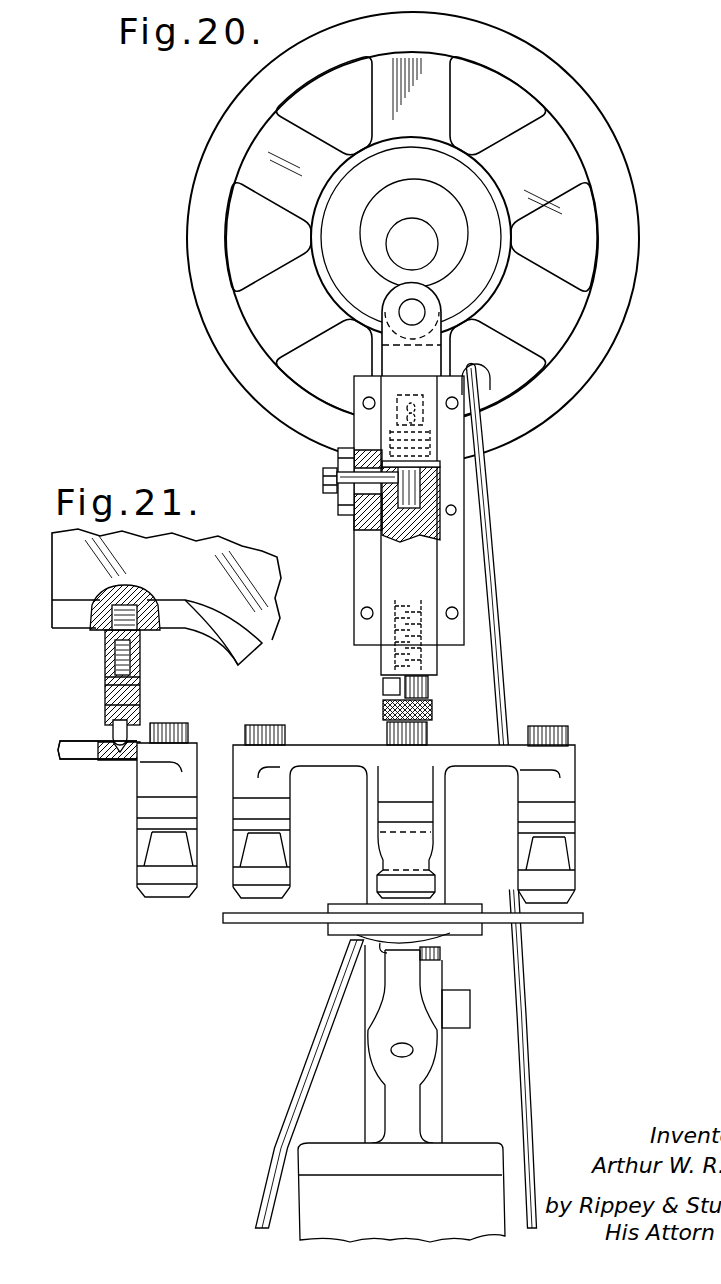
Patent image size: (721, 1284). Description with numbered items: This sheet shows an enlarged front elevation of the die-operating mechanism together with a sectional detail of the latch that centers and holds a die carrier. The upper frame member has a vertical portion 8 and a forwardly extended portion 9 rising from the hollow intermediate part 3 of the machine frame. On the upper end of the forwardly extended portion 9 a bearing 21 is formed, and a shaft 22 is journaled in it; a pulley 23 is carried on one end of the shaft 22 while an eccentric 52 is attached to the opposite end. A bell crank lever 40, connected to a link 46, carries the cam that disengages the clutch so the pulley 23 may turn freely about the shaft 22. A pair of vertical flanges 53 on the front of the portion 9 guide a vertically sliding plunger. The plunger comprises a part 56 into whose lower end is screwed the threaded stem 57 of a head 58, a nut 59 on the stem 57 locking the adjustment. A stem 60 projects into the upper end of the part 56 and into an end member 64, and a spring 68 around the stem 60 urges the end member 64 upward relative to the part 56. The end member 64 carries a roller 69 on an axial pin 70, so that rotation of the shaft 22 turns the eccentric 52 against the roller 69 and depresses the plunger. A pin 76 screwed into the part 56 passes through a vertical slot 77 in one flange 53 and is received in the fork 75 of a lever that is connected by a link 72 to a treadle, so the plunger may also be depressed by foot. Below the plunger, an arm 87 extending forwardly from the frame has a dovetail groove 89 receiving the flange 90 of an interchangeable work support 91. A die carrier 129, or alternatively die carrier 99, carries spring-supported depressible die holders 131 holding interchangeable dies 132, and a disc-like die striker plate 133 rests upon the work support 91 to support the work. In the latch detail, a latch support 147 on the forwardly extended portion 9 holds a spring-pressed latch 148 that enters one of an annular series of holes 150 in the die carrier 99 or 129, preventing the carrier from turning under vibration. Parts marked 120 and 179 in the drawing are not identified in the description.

In FIG. 20, the pulley 23 is at (592, 142).
In FIG. 20, the bearing 21 is at (465, 257).
In FIG. 20, the eccentric 52 is at (435, 200).
In FIG. 20, the shaft 22 is at (423, 237).
In FIG. 20, the vertical portion 8 is at (378, 335).
In FIG. 21, the vertical portion 8 is at (258, 615).
In FIG. 20, the roller 69 is at (435, 285).
In FIG. 20, the axial pin 70 is at (414, 311).
In FIG. 20, the end member 64 is at (422, 361).
In FIG. 20, the vertical flanges 53 is at (362, 607).
In FIG. 20, the plunger part 56 is at (407, 557).
In FIG. 20, the stem 60 is at (388, 537).
In FIG. 20, the spring 68 is at (440, 465).
In FIG. 20, the vertical slot 77 is at (362, 497).
In FIG. 20, the fork 75 is at (345, 500).
In FIG. 20, the pin 76 is at (327, 483).
In FIG. 20, the nut 59 is at (385, 685).
In FIG. 20, the threaded stem 57 is at (428, 693).
In FIG. 20, the head 58 is at (430, 713).
In FIG. 20, the link 46 is at (496, 568).
In FIG. 20, the bell crank lever 40 is at (490, 376).
In FIG. 20, the frame bar 120 is at (320, 755).
In FIG. 20, the die holders 131 is at (410, 737).
In FIG. 21, the die holders 131 is at (192, 730).
In FIG. 20, the dies 132 is at (388, 875).
In FIG. 21, the dies 132 is at (160, 872).
In FIG. 20, the work support 91 is at (370, 932).
In FIG. 20, the die striker plate 133 is at (583, 918).
In FIG. 20, the dovetail groove 89 is at (387, 950).
In FIG. 20, the flange 90 is at (402, 948).
In FIG. 20, the arm 87 is at (407, 968).
In FIG. 20, the intermediate part 3 is at (475, 1197).
In FIG. 20, the link 72 is at (277, 1148).
In FIG. 21, the forwardly extended portion 9 is at (68, 558).
In FIG. 21, the bolt head boss 179 is at (140, 655).
In FIG. 21, the latch support 147 is at (110, 660).
In FIG. 21, the latch 148 is at (118, 733).
In FIG. 21, the die carrier 99 is at (73, 748).
In FIG. 21, the die carrier 129 is at (97, 750).
In FIG. 21, the cavities or holes 150 is at (118, 757).